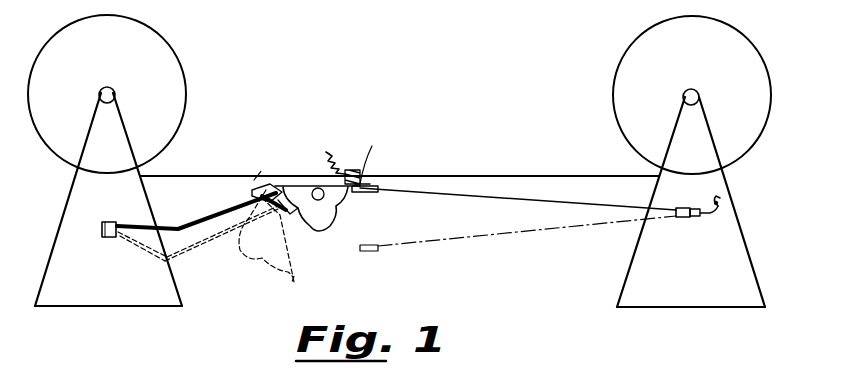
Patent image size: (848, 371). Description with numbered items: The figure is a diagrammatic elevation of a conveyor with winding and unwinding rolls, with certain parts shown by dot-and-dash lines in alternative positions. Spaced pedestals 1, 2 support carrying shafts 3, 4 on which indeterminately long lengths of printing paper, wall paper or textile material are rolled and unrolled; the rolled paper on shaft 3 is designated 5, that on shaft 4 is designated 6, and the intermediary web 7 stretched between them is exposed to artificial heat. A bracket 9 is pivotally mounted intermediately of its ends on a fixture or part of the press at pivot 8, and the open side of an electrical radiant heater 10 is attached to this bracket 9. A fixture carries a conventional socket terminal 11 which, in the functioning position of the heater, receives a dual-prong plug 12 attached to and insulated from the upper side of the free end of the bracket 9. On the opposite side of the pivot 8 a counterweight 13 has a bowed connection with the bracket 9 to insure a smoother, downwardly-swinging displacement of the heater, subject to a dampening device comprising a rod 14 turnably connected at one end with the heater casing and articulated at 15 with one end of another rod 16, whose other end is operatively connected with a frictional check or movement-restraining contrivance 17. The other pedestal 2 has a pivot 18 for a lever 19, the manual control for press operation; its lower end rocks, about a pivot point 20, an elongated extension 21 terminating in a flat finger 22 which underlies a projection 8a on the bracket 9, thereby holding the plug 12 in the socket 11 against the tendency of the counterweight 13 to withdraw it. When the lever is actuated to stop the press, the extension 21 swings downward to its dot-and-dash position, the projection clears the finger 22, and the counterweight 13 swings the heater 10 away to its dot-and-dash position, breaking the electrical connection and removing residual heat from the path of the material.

The pedestal 1 is at (62, 233).
The pedestal 2 is at (740, 246).
The shaft 3 is at (108, 87).
The shaft 4 is at (692, 89).
The rolled paper 5 is at (186, 90).
The rolled paper 6 is at (613, 79).
The web 7 is at (495, 176).
The pivot 8 is at (262, 184).
The projection 8a is at (362, 185).
The bracket 9 is at (280, 186).
The electrical heater 10 is at (336, 210).
The socket terminal 11 is at (350, 171).
The dual-prong plug 12 is at (365, 157).
The counterweight 13 is at (278, 211).
The rod 14 is at (208, 210).
The articulation 15 is at (180, 228).
The rod 16 is at (162, 226).
The frictional check 17 is at (106, 221).
The pivot 18 is at (716, 204).
The lever 19 is at (712, 214).
The pivot point 20 is at (678, 218).
The elongated extension 21 is at (512, 200).
The flat finger 22 is at (372, 192).